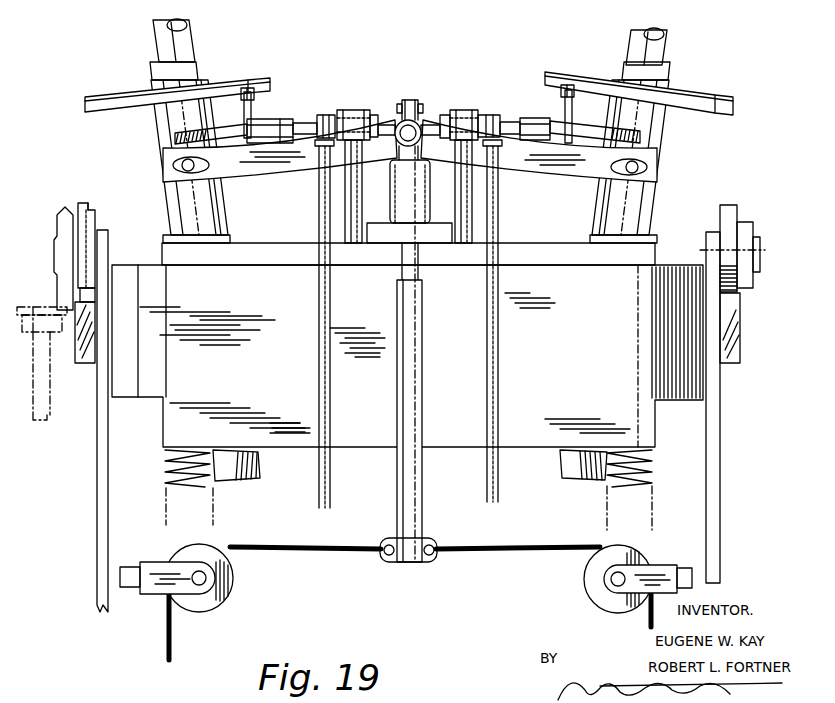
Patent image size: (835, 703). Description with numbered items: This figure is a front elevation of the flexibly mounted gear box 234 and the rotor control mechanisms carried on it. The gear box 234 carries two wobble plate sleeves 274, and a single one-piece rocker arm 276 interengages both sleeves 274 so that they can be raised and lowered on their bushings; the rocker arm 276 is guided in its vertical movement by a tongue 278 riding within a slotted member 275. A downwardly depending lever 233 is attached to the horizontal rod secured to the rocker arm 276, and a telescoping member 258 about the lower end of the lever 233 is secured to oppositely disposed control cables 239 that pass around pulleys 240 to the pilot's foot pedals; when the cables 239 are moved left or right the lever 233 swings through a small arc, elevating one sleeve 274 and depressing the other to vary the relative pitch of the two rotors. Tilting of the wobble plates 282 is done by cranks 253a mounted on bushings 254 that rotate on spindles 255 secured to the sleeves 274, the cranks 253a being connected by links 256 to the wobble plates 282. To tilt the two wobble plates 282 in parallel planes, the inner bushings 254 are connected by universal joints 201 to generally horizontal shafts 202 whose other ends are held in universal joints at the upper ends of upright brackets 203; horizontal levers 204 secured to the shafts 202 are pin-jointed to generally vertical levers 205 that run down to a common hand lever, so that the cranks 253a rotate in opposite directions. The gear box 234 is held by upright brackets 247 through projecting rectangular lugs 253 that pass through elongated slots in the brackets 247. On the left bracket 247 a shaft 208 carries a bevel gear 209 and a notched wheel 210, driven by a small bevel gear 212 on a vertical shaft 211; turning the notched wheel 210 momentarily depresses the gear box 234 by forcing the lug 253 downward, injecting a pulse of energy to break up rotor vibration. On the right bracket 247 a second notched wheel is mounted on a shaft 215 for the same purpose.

The universal joint 201 is at (293, 118).
The horizontal shaft 202 is at (343, 118).
The upright bracket 203 is at (416, 104).
The horizontal lever 204 is at (317, 137).
The vertical lever 205 is at (324, 212).
The shaft 208 is at (55, 262).
The bevel gear 209 is at (67, 203).
The notched wheel 210 is at (92, 205).
The vertical shaft 211 is at (45, 420).
The small bevel gear 212 is at (33, 308).
The shaft 215 is at (760, 250).
The lever 233 is at (421, 281).
The gear box 234 is at (683, 370).
The control cable 239 is at (315, 553).
The pulley 240 is at (197, 607).
The upright bracket 247 is at (722, 440).
The lug 253 is at (82, 362).
The crank 253a is at (594, 60).
The bushing 254 is at (243, 136).
The spindle 255 is at (176, 139).
The link 256 is at (283, 93).
The telescoping member 258 is at (427, 530).
The wobble plate sleeve 274 is at (160, 112).
The slotted member 275 is at (392, 207).
The rocker arm 276 is at (575, 160).
The tongue 278 is at (420, 158).
The wobble plate 282 is at (272, 80).